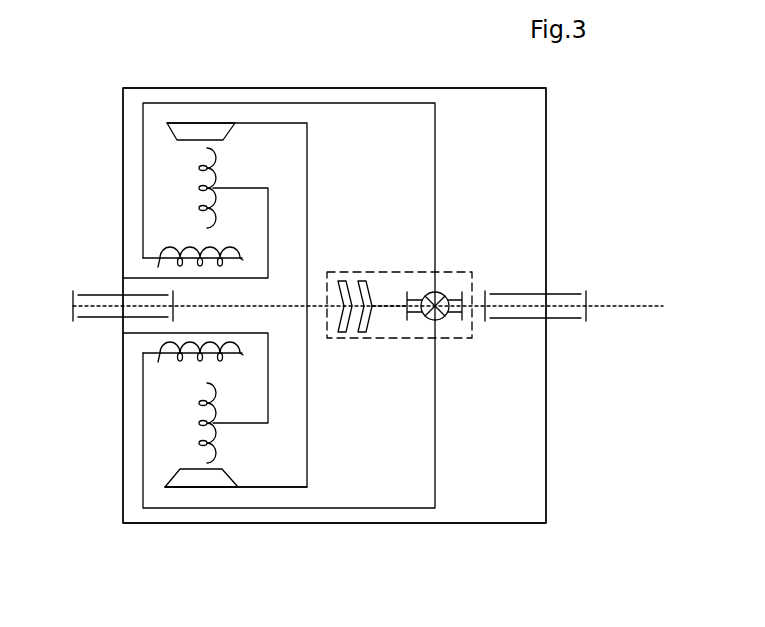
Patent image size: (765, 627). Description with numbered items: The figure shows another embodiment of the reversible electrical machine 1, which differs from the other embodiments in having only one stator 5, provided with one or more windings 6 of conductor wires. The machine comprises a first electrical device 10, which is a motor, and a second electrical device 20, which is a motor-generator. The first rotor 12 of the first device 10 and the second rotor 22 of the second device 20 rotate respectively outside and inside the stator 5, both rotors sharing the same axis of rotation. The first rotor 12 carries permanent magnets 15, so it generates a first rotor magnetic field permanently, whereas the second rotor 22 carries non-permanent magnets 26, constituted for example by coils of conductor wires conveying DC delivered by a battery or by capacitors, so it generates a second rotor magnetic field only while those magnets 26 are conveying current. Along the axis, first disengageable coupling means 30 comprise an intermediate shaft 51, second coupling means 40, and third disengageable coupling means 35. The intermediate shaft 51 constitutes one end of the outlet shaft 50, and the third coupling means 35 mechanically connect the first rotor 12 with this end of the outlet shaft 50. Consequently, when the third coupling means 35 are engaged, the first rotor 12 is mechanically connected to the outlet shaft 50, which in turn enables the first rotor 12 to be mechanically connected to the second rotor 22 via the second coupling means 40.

The reversible electrical machine 1 is at (610, 196).
The second electrical device 20 is at (138, 212).
The second rotor 22 is at (436, 167).
The first rotor 12 is at (308, 197).
The permanent magnets 15 is at (188, 130).
The stator 5 is at (253, 187).
The windings 6 is at (205, 168).
The non-permanent magnets 26 is at (165, 256).
The first electrical device 10 is at (263, 497).
The outlet shaft 50 is at (619, 307).
The intermediate shaft 51 is at (385, 308).
The first disengageable coupling means 30 is at (458, 272).
The third disengageable coupling means 35 is at (354, 282).
The second coupling means 40 is at (437, 322).